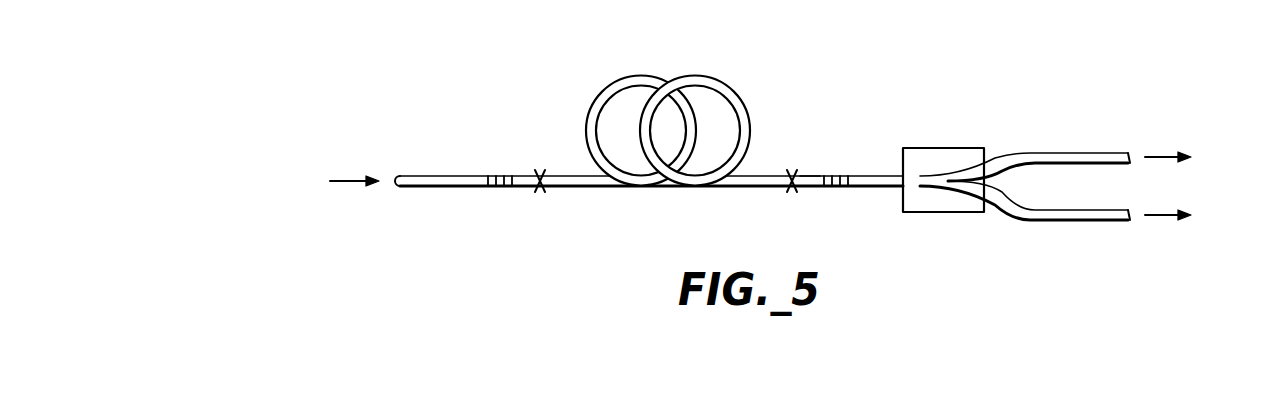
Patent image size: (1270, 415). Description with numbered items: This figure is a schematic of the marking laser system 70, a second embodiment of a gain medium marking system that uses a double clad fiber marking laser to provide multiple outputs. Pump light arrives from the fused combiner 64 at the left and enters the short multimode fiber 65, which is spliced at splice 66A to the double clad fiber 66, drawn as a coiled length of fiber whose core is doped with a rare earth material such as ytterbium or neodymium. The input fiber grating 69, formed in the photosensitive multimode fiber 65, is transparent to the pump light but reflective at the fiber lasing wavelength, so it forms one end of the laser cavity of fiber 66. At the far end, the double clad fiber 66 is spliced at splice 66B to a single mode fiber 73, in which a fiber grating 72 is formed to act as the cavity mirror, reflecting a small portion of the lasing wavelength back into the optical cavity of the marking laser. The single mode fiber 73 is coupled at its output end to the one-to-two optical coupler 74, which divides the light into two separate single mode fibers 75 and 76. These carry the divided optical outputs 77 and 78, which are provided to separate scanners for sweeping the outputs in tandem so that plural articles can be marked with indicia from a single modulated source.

The fused combiner 64 is at (241, 182).
The multimode fiber 65 is at (428, 175).
The double clad fiber 66 is at (722, 86).
The splice 66A is at (546, 189).
The splice 66B is at (795, 189).
The input fiber grating 69 is at (500, 175).
The marking laser system 70 is at (845, 64).
The fiber grating 72 is at (836, 175).
The single mode fiber 73 is at (810, 175).
The 1:2 optical coupler 74 is at (947, 147).
The single mode fiber 75 is at (1070, 153).
The single mode fiber 76 is at (1070, 210).
The divided optical output 77 is at (1162, 157).
The divided optical output 78 is at (1162, 215).